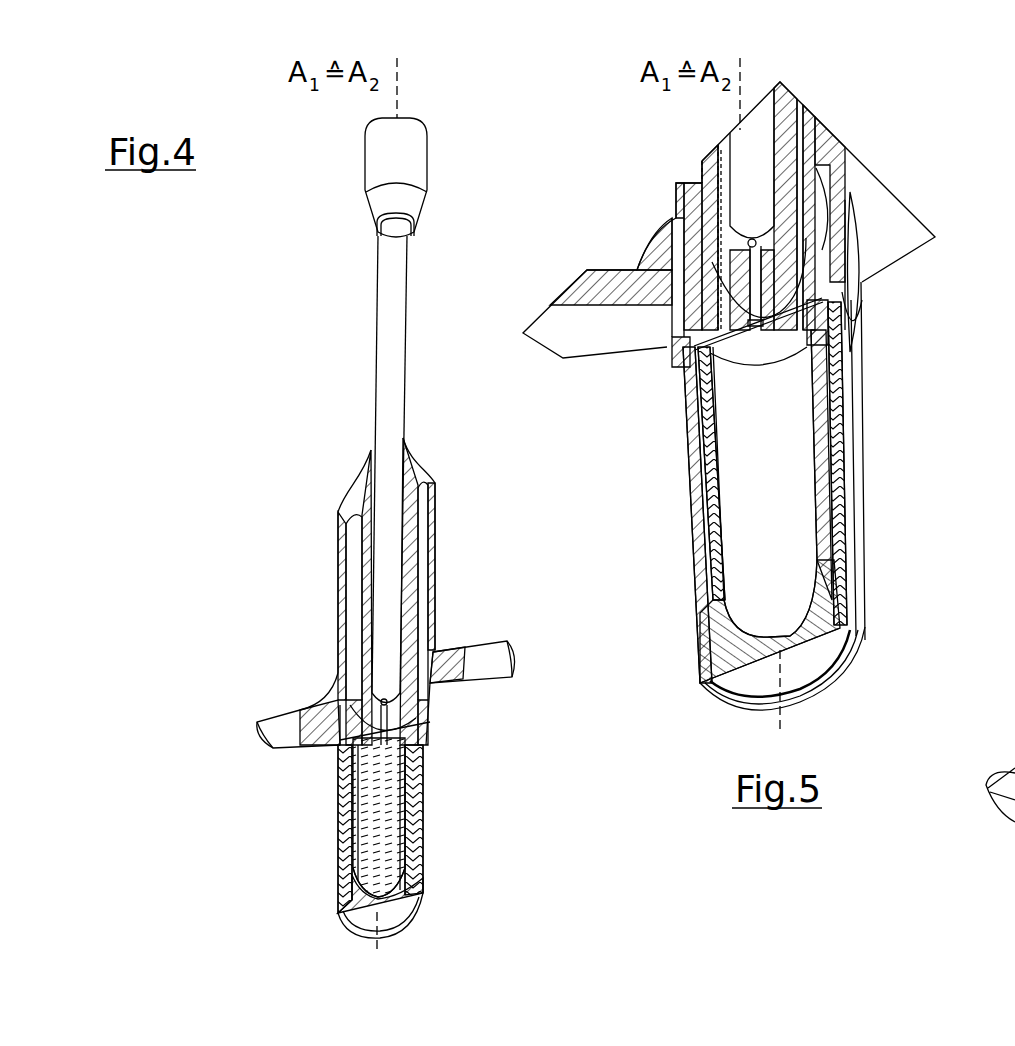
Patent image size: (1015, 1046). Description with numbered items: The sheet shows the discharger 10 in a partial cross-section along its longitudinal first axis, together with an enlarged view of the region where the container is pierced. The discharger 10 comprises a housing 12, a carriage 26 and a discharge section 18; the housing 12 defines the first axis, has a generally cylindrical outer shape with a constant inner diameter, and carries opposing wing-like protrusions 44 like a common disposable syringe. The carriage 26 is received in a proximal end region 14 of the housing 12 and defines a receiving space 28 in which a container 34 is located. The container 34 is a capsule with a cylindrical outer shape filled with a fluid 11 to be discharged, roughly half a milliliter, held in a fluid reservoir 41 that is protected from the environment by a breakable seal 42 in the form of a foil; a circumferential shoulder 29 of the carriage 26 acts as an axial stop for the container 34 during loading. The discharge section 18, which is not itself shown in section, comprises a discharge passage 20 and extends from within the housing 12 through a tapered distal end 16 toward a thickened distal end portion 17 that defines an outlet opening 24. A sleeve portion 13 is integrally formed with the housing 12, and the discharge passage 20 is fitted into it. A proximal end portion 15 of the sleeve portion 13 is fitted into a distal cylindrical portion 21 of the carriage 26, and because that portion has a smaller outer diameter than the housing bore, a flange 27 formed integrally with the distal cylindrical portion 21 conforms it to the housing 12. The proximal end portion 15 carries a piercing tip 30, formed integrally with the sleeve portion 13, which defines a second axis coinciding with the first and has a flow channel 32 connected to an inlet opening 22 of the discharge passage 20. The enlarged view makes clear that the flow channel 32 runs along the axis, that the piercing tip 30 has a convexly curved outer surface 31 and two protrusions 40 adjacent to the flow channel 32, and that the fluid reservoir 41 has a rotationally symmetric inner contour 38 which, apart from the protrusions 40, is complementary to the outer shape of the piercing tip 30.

In FIG. 4, the discharger 10 is at (196, 465).
In FIG. 4, the fluid 11 is at (392, 830).
In FIG. 4, the housing 12 is at (433, 573).
In FIG. 4, the sleeve portion 13 is at (368, 571).
In FIG. 5, the sleeve portion 13 is at (712, 168).
In FIG. 5, the proximal end region 14 is at (855, 257).
In FIG. 4, the proximal end portion 15 is at (400, 642).
In FIG. 5, the proximal end portion 15 is at (712, 216).
In FIG. 4, the tapered distal end 16 is at (410, 480).
In FIG. 4, the distal end portion 17 is at (382, 152).
In FIG. 4, the discharge section 18 is at (367, 370).
In FIG. 5, the discharge section 18 is at (783, 160).
In FIG. 4, the discharge passage 20 is at (385, 314).
In FIG. 5, the discharge passage 20 is at (760, 143).
In FIG. 4, the distal cylindrical portion 21 is at (430, 702).
In FIG. 5, the distal cylindrical portion 21 is at (825, 232).
In FIG. 4, the inlet opening 22 is at (343, 675).
In FIG. 5, the inlet opening 22 is at (667, 297).
In FIG. 4, the outlet opening 24 is at (420, 121).
In FIG. 4, the carriage 26 is at (427, 807).
In FIG. 5, the carriage 26 is at (848, 470).
In FIG. 4, the flange 27 is at (345, 684).
In FIG. 5, the flange 27 is at (688, 207).
In FIG. 4, the receiving space 28 is at (350, 863).
In FIG. 5, the receiving space 28 is at (826, 548).
In FIG. 4, the circumferential shoulder 29 is at (340, 740).
In FIG. 5, the circumferential shoulder 29 is at (822, 288).
In FIG. 4, the piercing tip 30 is at (350, 705).
In FIG. 5, the piercing tip 30 is at (823, 300).
In FIG. 4, the convexly curved outer surface 31 is at (340, 735).
In FIG. 5, the convexly curved outer surface 31 is at (853, 253).
In FIG. 4, the flow channel 32 is at (418, 727).
In FIG. 5, the flow channel 32 is at (710, 330).
In FIG. 4, the container 34 is at (417, 778).
In FIG. 5, the container 34 is at (820, 425).
In FIG. 4, the inner contour 38 is at (420, 888).
In FIG. 5, the inner contour 38 is at (727, 622).
In FIG. 5, the protrusions 40 is at (770, 328).
In FIG. 4, the fluid reservoir 41 is at (353, 866).
In FIG. 5, the fluid reservoir 41 is at (767, 503).
In FIG. 4, the breakable seal 42 is at (357, 752).
In FIG. 5, the breakable seal 42 is at (703, 417).
In FIG. 4, the wing-like protrusions 44 is at (482, 688).
In FIG. 5, the wing-like protrusions 44 is at (597, 332).